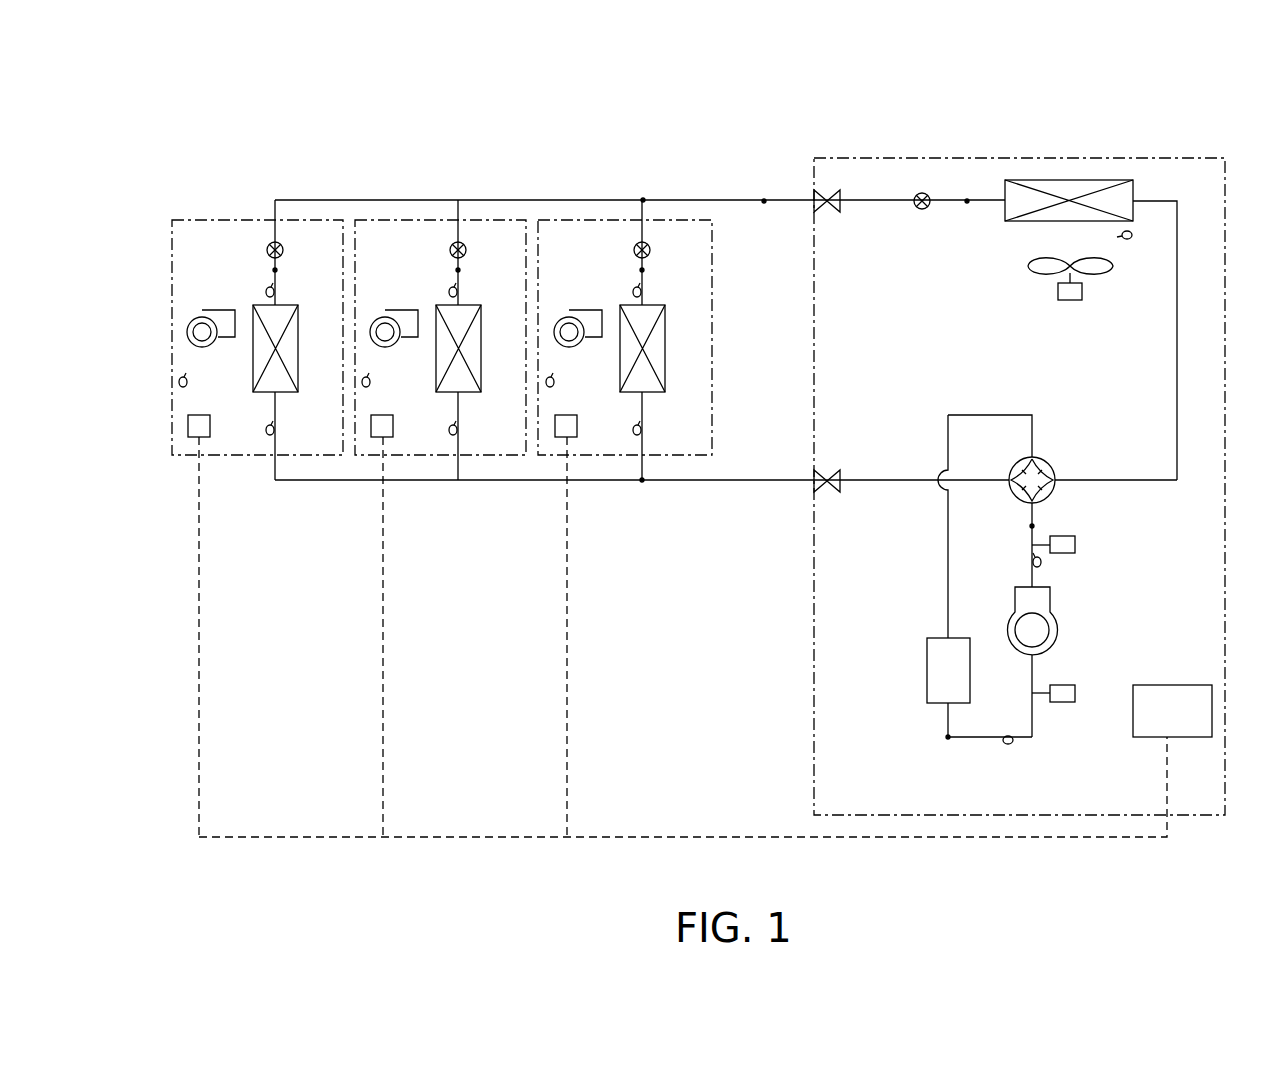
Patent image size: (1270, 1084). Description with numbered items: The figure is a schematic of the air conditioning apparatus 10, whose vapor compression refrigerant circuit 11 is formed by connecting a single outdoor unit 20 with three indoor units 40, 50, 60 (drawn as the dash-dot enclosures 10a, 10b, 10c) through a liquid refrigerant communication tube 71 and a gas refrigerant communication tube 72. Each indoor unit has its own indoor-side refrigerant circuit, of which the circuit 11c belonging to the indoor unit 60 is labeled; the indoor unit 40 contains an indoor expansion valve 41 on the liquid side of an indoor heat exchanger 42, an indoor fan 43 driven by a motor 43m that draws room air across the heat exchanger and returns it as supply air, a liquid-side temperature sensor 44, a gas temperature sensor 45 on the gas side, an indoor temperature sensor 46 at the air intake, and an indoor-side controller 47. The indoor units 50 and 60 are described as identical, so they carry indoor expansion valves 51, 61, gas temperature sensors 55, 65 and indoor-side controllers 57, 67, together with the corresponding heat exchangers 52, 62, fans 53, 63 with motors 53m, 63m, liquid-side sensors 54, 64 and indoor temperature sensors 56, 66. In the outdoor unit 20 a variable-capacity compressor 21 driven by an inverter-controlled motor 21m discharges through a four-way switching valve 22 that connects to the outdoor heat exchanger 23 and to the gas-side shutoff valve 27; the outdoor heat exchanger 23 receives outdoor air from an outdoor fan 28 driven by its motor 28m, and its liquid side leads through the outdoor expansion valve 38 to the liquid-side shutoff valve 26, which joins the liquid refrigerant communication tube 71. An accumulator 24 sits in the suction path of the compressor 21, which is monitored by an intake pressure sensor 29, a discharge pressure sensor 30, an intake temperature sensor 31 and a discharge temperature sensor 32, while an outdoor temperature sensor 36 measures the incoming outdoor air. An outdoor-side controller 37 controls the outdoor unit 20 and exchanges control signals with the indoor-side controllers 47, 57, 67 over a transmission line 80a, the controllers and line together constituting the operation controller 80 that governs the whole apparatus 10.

The air conditioning apparatus 10 is at (1220, 142).
The indoor unit 10a is at (257, 228).
The indoor unit 10b is at (440, 228).
The indoor unit 10c is at (624, 228).
The refrigerant circuit 11 is at (785, 178).
The indoor-side refrigerant circuit 11c is at (1163, 168).
The outdoor unit 20 is at (1190, 150).
The compressor 21 is at (1007, 597).
The motor 21m is at (1012, 642).
The four-way switching valve 22 is at (1012, 466).
The outdoor heat exchanger 23 is at (1088, 180).
The accumulator 24 is at (927, 660).
The liquid-side shutoff valve 26 is at (830, 190).
The gas-side shutoff valve 27 is at (830, 492).
The outdoor fan 28 is at (1030, 268).
The motor 28m is at (1058, 293).
The intake pressure sensor 29 is at (1066, 684).
The discharge pressure sensor 30 is at (1075, 540).
The intake temperature sensor 31 is at (1014, 741).
The discharge temperature sensor 32 is at (1042, 566).
The outdoor temperature sensor 36 is at (1133, 233).
The outdoor-side controller 37 is at (1185, 738).
The outdoor expansion valve 38 is at (928, 207).
The indoor unit 40 is at (335, 215).
The indoor expansion valve 41 is at (285, 247).
The indoor heat exchanger 42 is at (294, 306).
The indoor fan 43 is at (203, 314).
The motor 43m is at (187, 315).
The liquid-side temperature sensor 44 is at (268, 288).
The gas temperature sensor 45 is at (270, 437).
The indoor temperature sensor 46 is at (181, 386).
The indoor-side controller 47 is at (197, 440).
The indoor unit 50 is at (515, 215).
The indoor expansion valve 51 is at (468, 247).
The indoor heat exchanger 52 is at (477, 306).
The indoor fan 53 is at (386, 314).
The indoor fan motor 53m is at (370, 315).
The gas-side temperature sensor 54 is at (451, 288).
The gas temperature sensor 55 is at (452, 437).
The indoor temperature sensor 56 is at (364, 386).
The indoor-side controller 57 is at (380, 440).
The indoor unit 60 is at (703, 198).
The indoor expansion valve 61 is at (652, 247).
The indoor heat exchanger 62 is at (660, 306).
The indoor fan 63 is at (570, 314).
The indoor fan motor 63m is at (554, 315).
The gas-side temperature sensor 64 is at (635, 288).
The gas temperature sensor 65 is at (636, 437).
The indoor temperature sensor 66 is at (548, 386).
The indoor-side controller 67 is at (564, 440).
The liquid refrigerant communication tube 71 is at (738, 198).
The gas refrigerant communication tube 72 is at (712, 482).
The operation controller 80 is at (583, 802).
The transmission line 80a is at (505, 835).